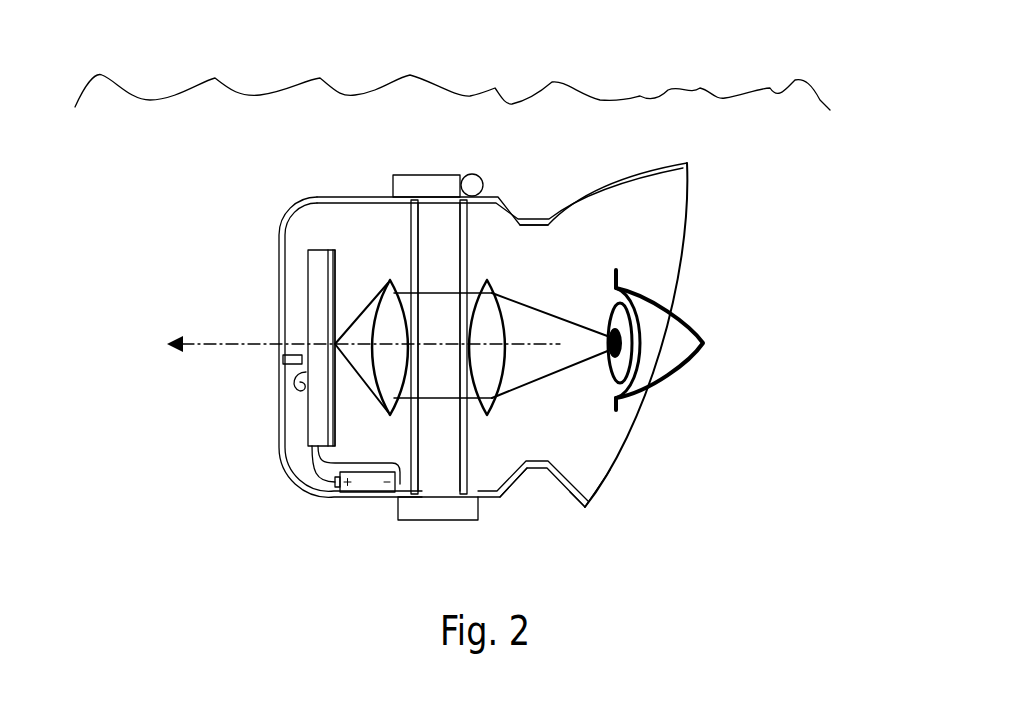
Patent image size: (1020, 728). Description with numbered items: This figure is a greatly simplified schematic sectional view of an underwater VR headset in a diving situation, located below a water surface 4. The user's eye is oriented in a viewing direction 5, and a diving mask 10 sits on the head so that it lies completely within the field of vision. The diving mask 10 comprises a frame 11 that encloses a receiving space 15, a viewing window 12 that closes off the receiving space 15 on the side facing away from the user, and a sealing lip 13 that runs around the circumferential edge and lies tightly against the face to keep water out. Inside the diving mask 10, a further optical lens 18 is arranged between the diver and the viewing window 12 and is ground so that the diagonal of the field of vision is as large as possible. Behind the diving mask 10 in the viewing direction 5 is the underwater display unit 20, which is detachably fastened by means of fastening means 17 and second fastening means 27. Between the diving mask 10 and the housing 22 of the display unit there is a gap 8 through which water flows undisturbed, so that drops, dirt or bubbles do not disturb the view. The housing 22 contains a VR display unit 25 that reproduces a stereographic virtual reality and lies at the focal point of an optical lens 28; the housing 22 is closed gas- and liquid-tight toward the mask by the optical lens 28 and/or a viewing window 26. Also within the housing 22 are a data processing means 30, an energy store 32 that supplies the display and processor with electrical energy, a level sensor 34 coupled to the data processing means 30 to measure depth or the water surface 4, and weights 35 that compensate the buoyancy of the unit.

The water surface 4 is at (722, 100).
The viewing direction 5 is at (203, 340).
The gap 8 is at (438, 267).
The diving mask 10 is at (712, 231).
The frame 11 is at (532, 216).
The viewing window 12 is at (515, 478).
The sealing lip 13 is at (577, 496).
The receiving space 15 is at (590, 266).
The fastening element 17 is at (428, 303).
The optical lens 18 is at (482, 386).
The underwater display unit 20 is at (308, 168).
The housing 22 is at (280, 264).
The VR display unit 25 is at (327, 390).
The viewing window 26 is at (410, 257).
The second fastening means 27 is at (448, 188).
The optical lens 28 is at (390, 378).
The data processing means 30 is at (318, 267).
The energy store 32 is at (301, 511).
The level sensor 34 is at (282, 358).
The weights 35 is at (358, 482).